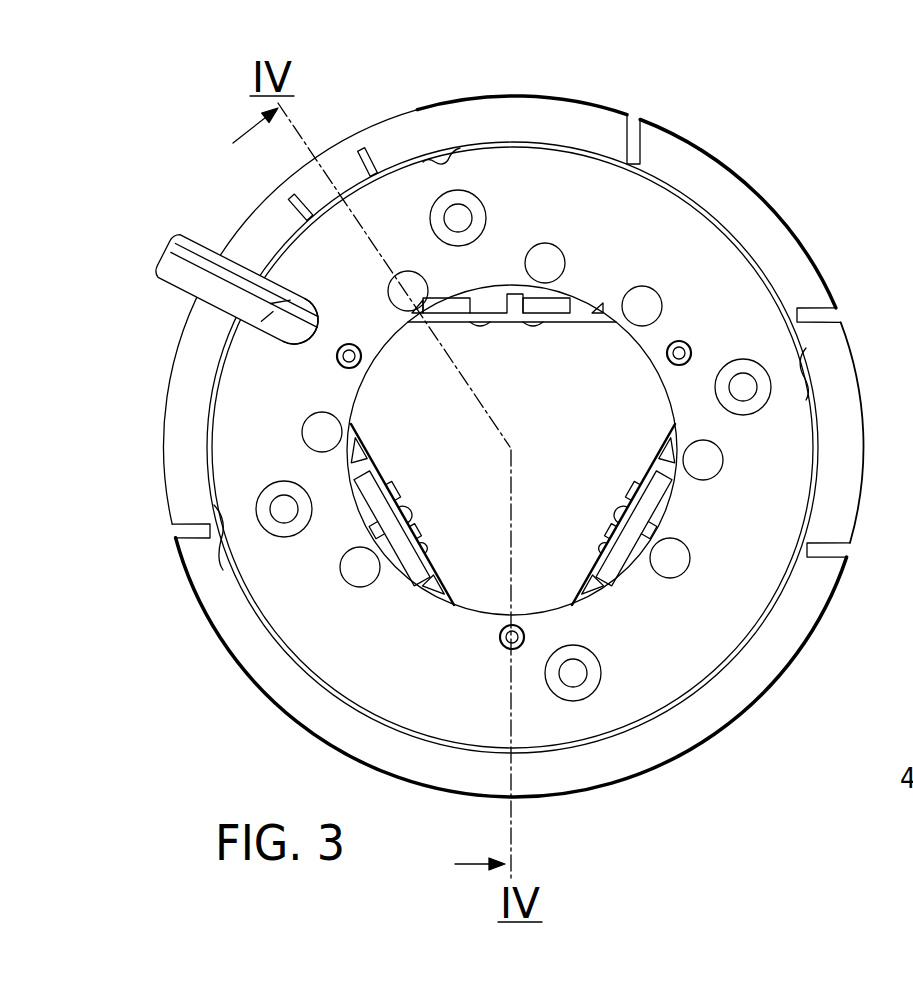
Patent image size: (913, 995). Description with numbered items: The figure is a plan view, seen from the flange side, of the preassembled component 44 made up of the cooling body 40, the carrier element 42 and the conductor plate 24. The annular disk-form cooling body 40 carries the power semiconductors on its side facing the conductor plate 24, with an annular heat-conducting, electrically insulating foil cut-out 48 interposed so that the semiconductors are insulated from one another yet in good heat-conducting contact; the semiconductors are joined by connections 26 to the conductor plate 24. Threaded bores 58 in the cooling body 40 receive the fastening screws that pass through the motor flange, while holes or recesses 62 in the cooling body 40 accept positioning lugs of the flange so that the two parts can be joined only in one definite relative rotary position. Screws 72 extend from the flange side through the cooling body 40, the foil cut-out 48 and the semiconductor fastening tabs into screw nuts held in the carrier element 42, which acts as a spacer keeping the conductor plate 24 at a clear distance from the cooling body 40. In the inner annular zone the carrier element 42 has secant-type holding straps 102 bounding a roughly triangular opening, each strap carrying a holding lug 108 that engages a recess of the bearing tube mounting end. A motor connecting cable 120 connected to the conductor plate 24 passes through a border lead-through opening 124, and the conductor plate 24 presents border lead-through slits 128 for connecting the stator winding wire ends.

The conductor plate 24 is at (462, 117).
The connections 26 is at (305, 198).
The cooling body 40 is at (718, 250).
The carrier element 42 is at (444, 562).
The preassembled component 44 is at (209, 697).
The foil cut-out 48 is at (433, 160).
The threaded bores 58 is at (687, 346).
The holes or recesses 62 is at (764, 414).
The screw 72 is at (409, 271).
The holding straps 102 is at (570, 320).
The holding lug 108 is at (497, 322).
The motor connecting cable 120 is at (163, 254).
The border lead-through opening 124 is at (305, 290).
The border lead-through slits 128 is at (634, 138).